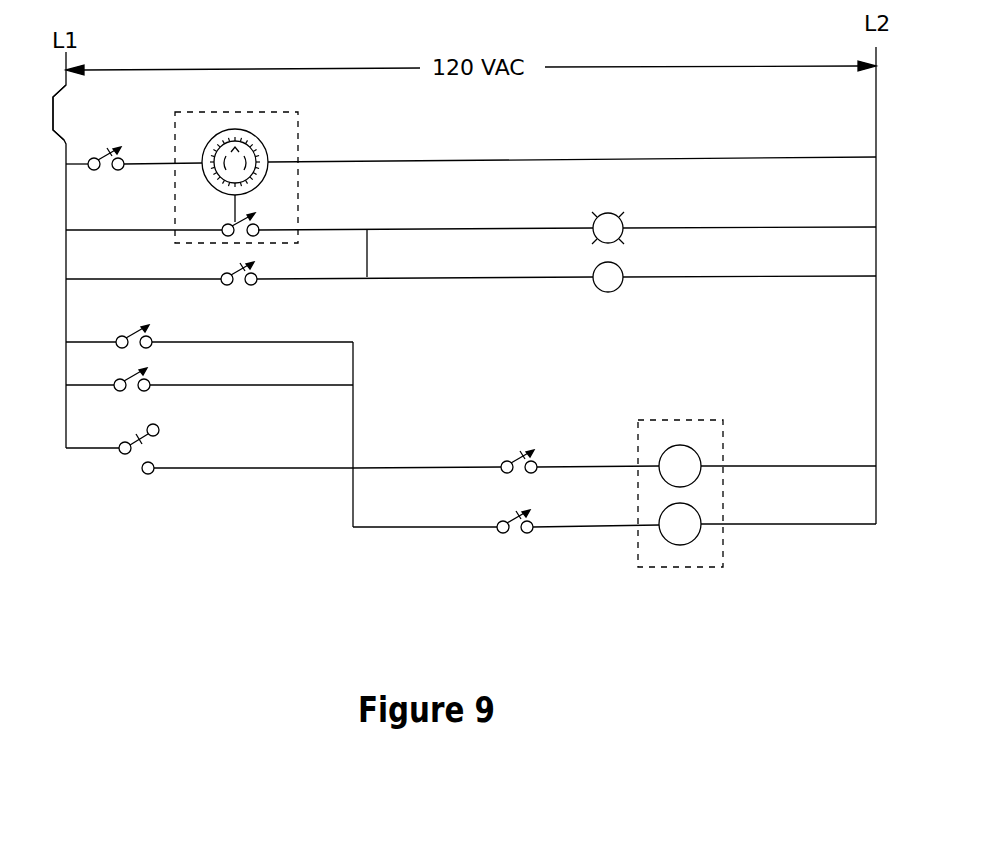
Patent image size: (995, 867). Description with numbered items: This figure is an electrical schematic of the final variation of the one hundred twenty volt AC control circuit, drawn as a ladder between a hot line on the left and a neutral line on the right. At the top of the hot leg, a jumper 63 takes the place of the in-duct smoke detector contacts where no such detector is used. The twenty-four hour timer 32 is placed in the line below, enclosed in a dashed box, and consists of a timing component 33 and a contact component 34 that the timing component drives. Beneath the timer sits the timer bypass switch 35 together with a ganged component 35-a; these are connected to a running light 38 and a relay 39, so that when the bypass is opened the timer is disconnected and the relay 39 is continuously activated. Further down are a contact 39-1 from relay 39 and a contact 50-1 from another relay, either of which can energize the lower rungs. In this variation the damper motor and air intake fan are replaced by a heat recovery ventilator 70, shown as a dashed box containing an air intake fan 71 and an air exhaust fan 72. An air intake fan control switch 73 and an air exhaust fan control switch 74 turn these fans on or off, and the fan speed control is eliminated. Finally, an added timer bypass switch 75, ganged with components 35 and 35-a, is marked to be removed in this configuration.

The jumper 63 is at (67, 118).
The 24-hour timer 32 is at (307, 148).
The timing component 33 is at (265, 180).
The contact component 34 is at (226, 216).
The timer bypass switch 35 is at (98, 170).
The timer bypass switch component 35-a is at (213, 269).
The running light 38 is at (593, 219).
The relay 39 is at (620, 286).
The contact from relay 39 39-1 is at (150, 335).
The contact from relay 50 50-1 is at (163, 370).
The heat recovery ventilator 70 is at (697, 577).
The air intake fan 71 is at (690, 445).
The air exhaust fan 72 is at (695, 537).
The air intake fan control switch 73 is at (535, 442).
The air exhaust fan control switch 74 is at (522, 540).
The timer bypass switch 75 is at (127, 460).